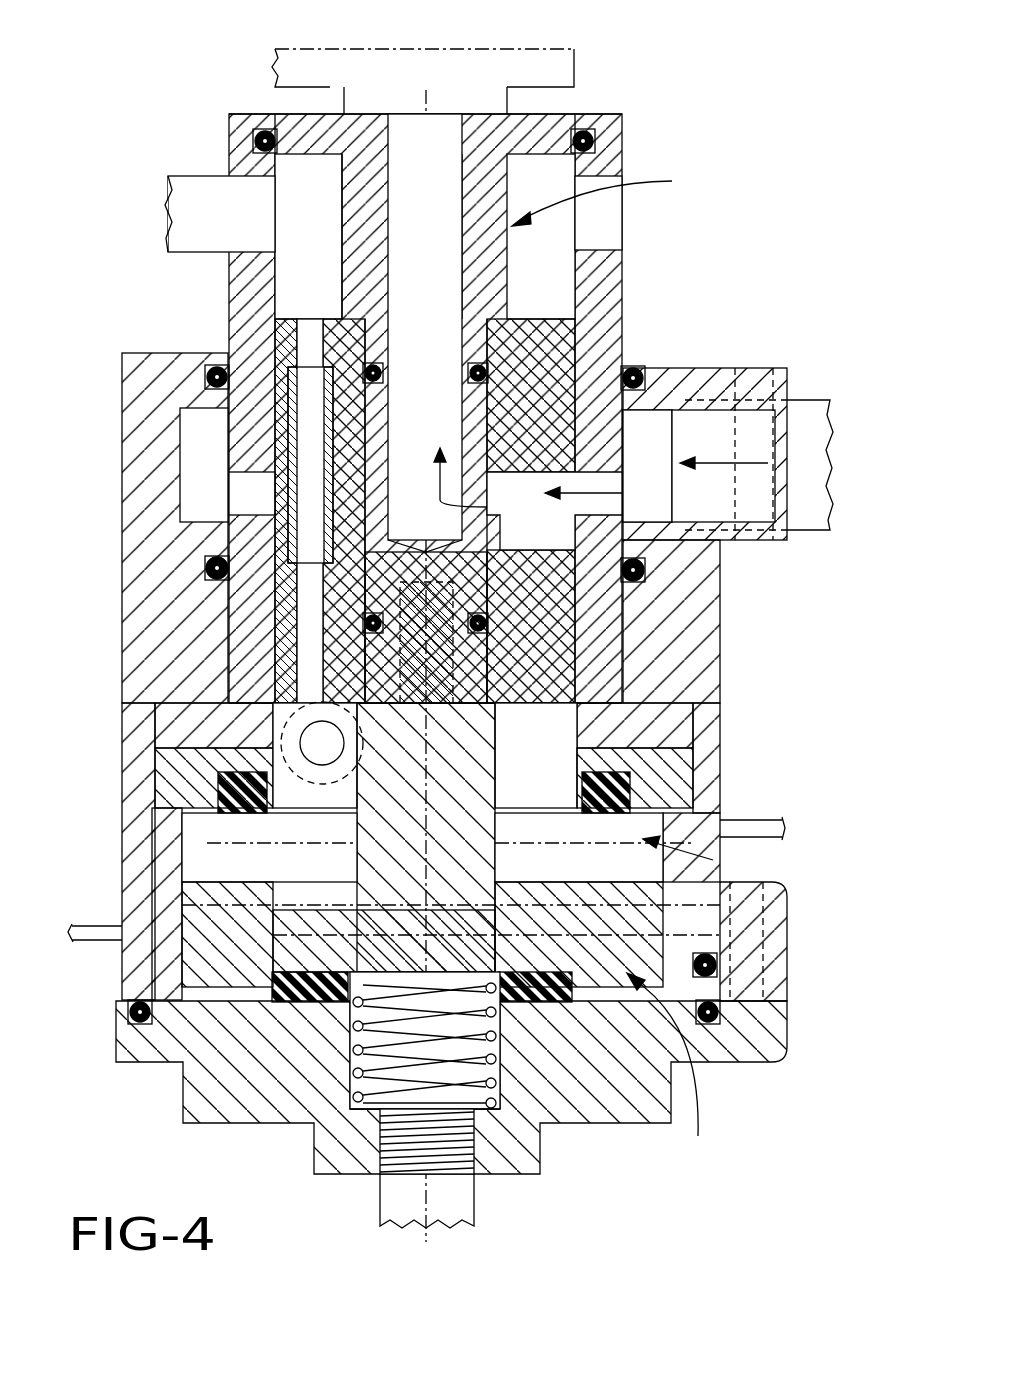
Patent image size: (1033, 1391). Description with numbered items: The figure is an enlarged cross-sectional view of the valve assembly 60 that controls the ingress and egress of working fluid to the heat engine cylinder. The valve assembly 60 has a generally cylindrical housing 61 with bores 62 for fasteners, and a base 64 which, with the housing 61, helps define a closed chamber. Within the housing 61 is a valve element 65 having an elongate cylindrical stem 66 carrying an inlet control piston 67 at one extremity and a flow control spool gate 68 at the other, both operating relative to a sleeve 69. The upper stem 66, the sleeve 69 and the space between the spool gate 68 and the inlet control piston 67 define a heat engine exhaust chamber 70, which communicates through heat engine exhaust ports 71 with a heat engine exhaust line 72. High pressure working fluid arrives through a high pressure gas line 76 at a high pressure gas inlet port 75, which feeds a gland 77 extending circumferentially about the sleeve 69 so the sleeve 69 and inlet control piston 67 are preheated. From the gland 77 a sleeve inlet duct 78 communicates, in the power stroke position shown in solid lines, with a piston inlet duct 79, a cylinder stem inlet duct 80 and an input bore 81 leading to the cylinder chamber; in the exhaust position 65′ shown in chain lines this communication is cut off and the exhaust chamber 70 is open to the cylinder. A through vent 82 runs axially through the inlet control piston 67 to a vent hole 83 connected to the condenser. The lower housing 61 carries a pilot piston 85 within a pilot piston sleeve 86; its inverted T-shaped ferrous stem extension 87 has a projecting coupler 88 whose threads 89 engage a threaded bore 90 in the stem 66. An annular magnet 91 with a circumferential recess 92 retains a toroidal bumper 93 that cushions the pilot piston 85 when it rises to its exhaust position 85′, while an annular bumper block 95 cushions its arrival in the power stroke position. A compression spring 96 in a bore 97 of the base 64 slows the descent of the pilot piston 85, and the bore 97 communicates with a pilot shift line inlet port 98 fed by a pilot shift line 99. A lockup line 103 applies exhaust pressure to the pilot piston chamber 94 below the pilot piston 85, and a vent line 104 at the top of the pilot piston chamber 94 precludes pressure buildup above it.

The valve assembly 60 is at (656, 284).
The housing 61 is at (680, 677).
The bores 62 is at (760, 368).
The base 64 is at (642, 1116).
The valve element 65 is at (609, 197).
The exhaust position 65′ is at (533, 46).
The stem 66 is at (360, 275).
The inlet control piston 67 is at (340, 657).
The flow control spool gate 68 is at (542, 127).
The sleeve 69 is at (608, 328).
The heat engine exhaust chamber 70 is at (297, 214).
The heat engine exhaust ports 71 is at (252, 178).
The heat engine exhaust line 72 is at (186, 254).
The high pressure gas inlet port 75 is at (700, 512).
The high pressure gas line 76 is at (810, 398).
The gland 77 is at (190, 454).
The sleeve inlet duct 78 is at (605, 513).
The piston inlet duct 79 is at (513, 550).
The cylinder stem inlet duct 80 is at (377, 530).
The input bore 81 is at (388, 416).
The through vent 82 is at (300, 345).
The vent hole 83 is at (318, 746).
The pilot piston 85 is at (670, 1068).
The exhaust position of pilot piston 85′ is at (713, 860).
The pilot piston sleeve 86 is at (677, 943).
The stem extension 87 is at (400, 813).
The projecting coupler 88 is at (450, 735).
The threads 89 is at (418, 690).
The bore 90 is at (480, 663).
The annular magnet 91 is at (177, 768).
The circumferential recess 92 is at (233, 812).
The toroidal bumper 93 is at (617, 798).
The pilot piston chamber 94 is at (217, 867).
The annular bumper block 95 is at (308, 992).
The compression spring 96 is at (460, 1068).
The bore 97 is at (350, 1031).
The pilot shift line inlet port 98 is at (481, 1162).
The pilot shift line 99 is at (408, 1203).
The lockup line 103 is at (105, 938).
The vent line 104 is at (738, 823).